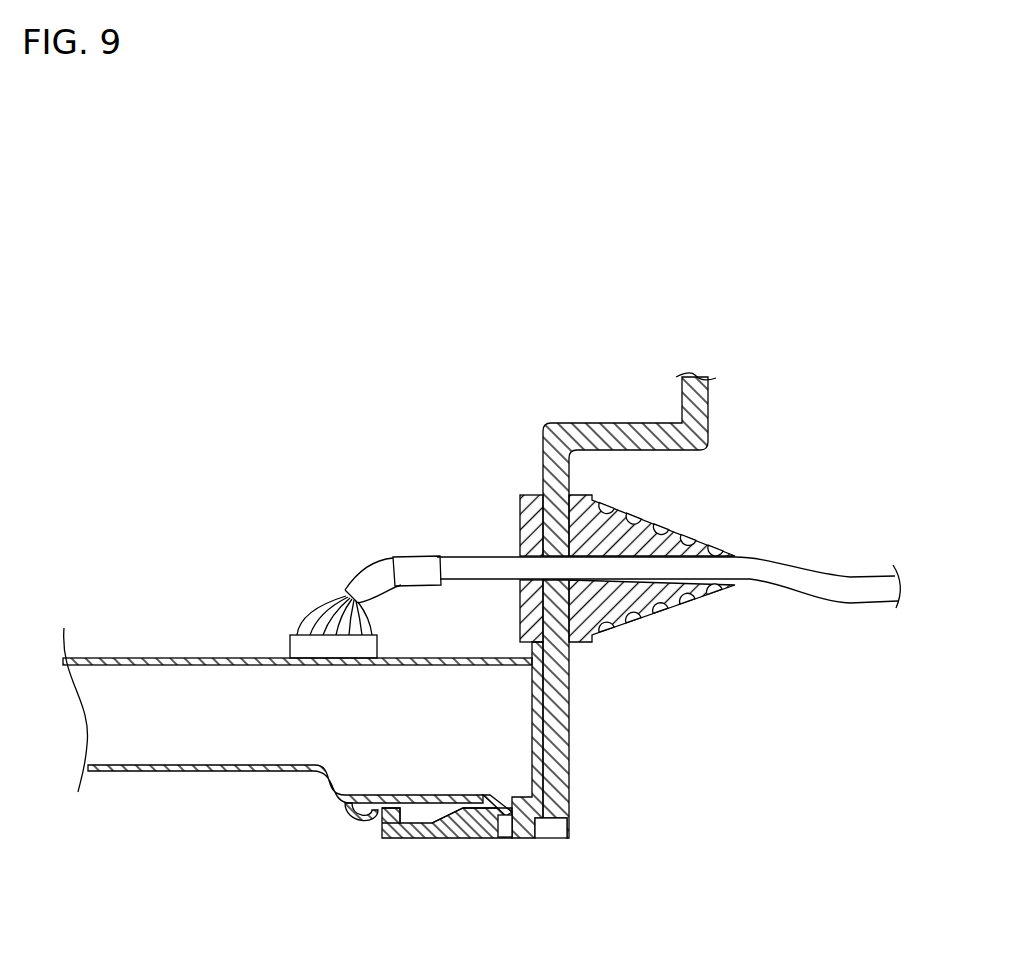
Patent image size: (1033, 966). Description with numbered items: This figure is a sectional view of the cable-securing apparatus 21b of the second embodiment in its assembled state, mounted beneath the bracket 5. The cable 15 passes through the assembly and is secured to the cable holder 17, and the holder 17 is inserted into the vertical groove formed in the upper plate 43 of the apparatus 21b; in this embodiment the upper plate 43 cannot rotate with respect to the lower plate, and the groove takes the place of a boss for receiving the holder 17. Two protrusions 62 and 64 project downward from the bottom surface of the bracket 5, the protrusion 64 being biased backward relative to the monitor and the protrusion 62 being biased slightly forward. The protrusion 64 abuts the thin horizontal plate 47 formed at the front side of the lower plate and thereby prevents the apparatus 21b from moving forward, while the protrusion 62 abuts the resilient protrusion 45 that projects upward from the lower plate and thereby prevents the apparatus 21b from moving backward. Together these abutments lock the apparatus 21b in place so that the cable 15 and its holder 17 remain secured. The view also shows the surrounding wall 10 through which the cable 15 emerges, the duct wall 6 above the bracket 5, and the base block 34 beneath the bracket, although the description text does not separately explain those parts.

The cabinet wall 10 is at (708, 410).
The cable holder 17 is at (648, 534).
The cable 15 is at (790, 570).
The upper duct wall 6 is at (175, 657).
The bracket 5 is at (207, 773).
The apparatus 21b is at (581, 722).
The upper plate 43 is at (572, 748).
The protrusion 64 is at (347, 806).
The horizontal plate 47 is at (366, 832).
The bracket block 34 is at (410, 840).
The resilient protrusion 45 is at (470, 840).
The protrusion 62 is at (515, 840).